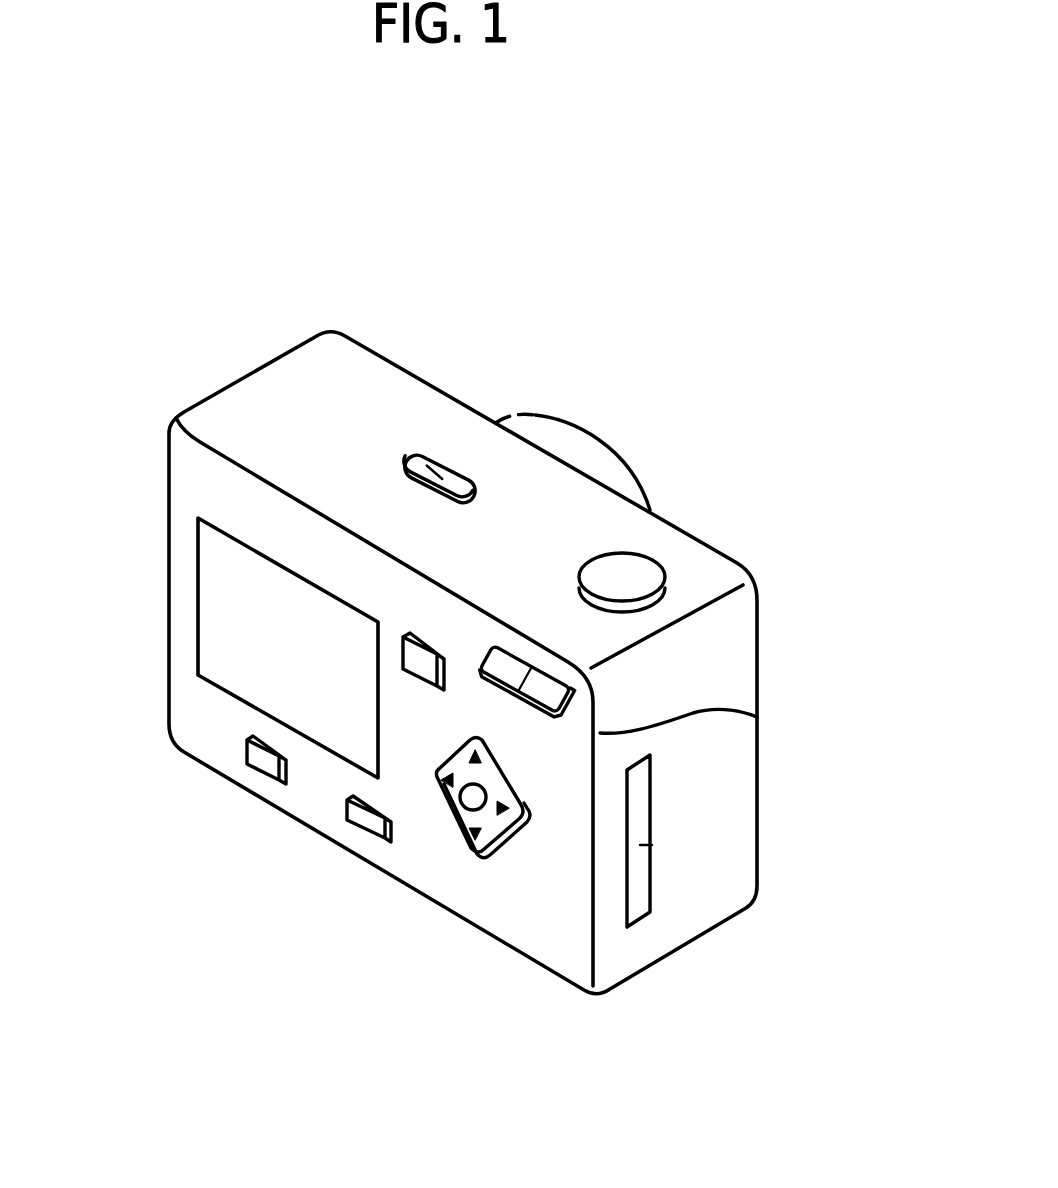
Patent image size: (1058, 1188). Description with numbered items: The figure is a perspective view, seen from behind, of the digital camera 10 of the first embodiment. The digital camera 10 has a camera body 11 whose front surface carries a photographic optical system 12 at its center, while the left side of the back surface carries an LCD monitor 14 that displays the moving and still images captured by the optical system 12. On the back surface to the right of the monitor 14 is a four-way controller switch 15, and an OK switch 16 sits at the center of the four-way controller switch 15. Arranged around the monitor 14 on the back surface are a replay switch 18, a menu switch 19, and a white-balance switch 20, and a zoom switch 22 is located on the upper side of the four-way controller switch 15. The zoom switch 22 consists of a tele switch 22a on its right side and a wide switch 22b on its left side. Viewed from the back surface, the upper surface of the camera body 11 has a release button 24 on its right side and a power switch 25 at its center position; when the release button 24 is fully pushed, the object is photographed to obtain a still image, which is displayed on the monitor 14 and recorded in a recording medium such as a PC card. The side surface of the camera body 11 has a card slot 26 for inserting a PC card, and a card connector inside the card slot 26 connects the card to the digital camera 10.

The digital camera 10 is at (455, 328).
The camera body 11 is at (298, 404).
The photographic optical system 12 is at (568, 420).
The LCD monitor 14 is at (273, 632).
The four-way controller switch 15 is at (503, 845).
The OK switch 16 is at (463, 803).
The replay switch 18 is at (420, 663).
The menu switch 19 is at (372, 818).
The white-balance (WB) switch 20 is at (266, 761).
The zoom switch 22 is at (536, 660).
The tele switch 22a is at (757, 717).
The wide switch 22b is at (648, 850).
The release button 24 is at (622, 577).
The power switch 25 is at (407, 455).
The card slot 26 is at (663, 848).